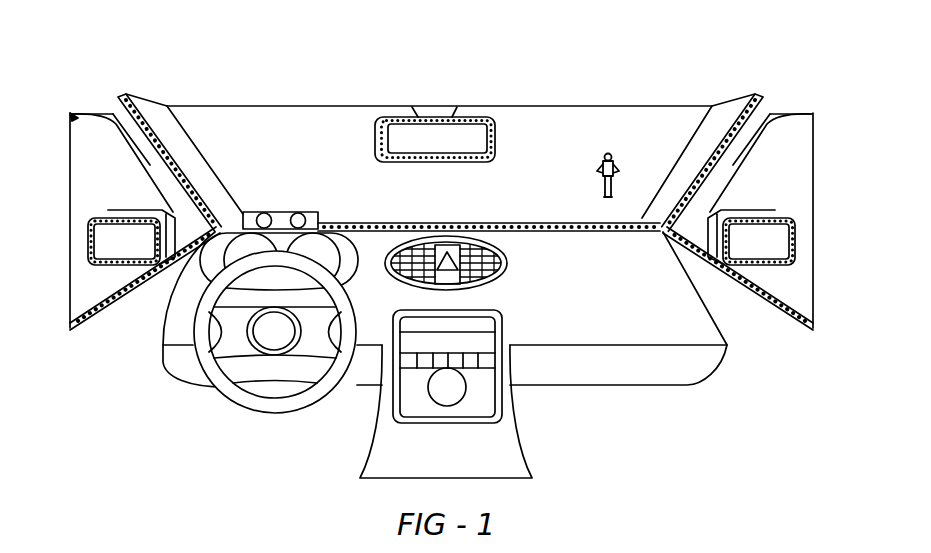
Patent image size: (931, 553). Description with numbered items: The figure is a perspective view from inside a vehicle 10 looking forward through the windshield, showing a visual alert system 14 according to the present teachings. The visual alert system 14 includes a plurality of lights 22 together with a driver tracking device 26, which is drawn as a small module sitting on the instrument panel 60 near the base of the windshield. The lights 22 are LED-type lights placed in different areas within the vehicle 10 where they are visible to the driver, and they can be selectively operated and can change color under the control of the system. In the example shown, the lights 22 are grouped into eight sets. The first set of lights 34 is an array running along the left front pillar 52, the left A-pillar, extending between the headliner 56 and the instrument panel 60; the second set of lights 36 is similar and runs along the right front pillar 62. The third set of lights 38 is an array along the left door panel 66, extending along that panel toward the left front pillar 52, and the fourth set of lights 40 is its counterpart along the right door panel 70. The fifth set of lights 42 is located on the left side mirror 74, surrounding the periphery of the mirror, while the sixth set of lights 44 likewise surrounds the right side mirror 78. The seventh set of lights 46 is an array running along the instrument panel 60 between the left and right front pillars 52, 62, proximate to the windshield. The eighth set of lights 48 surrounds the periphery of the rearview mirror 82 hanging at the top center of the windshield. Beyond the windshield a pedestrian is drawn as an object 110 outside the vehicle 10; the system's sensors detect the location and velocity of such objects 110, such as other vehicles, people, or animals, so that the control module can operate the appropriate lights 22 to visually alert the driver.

The vehicle 10 is at (144, 62).
The visual alert system 14 is at (247, 122).
The lights 22 is at (700, 133).
The driver tracking device 26 is at (283, 212).
The first set of lights 34 is at (123, 107).
The second set of lights 36 is at (760, 107).
The third set of lights 38 is at (112, 282).
The fourth set of lights 40 is at (777, 295).
The fifth set of lights 42 is at (103, 220).
The sixth set of lights 44 is at (770, 215).
The seventh set of lights 46 is at (364, 222).
The eighth set of lights 48 is at (495, 135).
The left front pillar 52 is at (143, 157).
The headliner 56 is at (72, 117).
The instrument panel 60 is at (603, 320).
The right front pillar 62 is at (753, 147).
The left door panel 66 is at (137, 320).
The right door panel 70 is at (743, 307).
The left side mirror 74 is at (123, 243).
The right side mirror 78 is at (762, 237).
The rearview mirror 82 is at (403, 133).
The object 110 is at (602, 168).